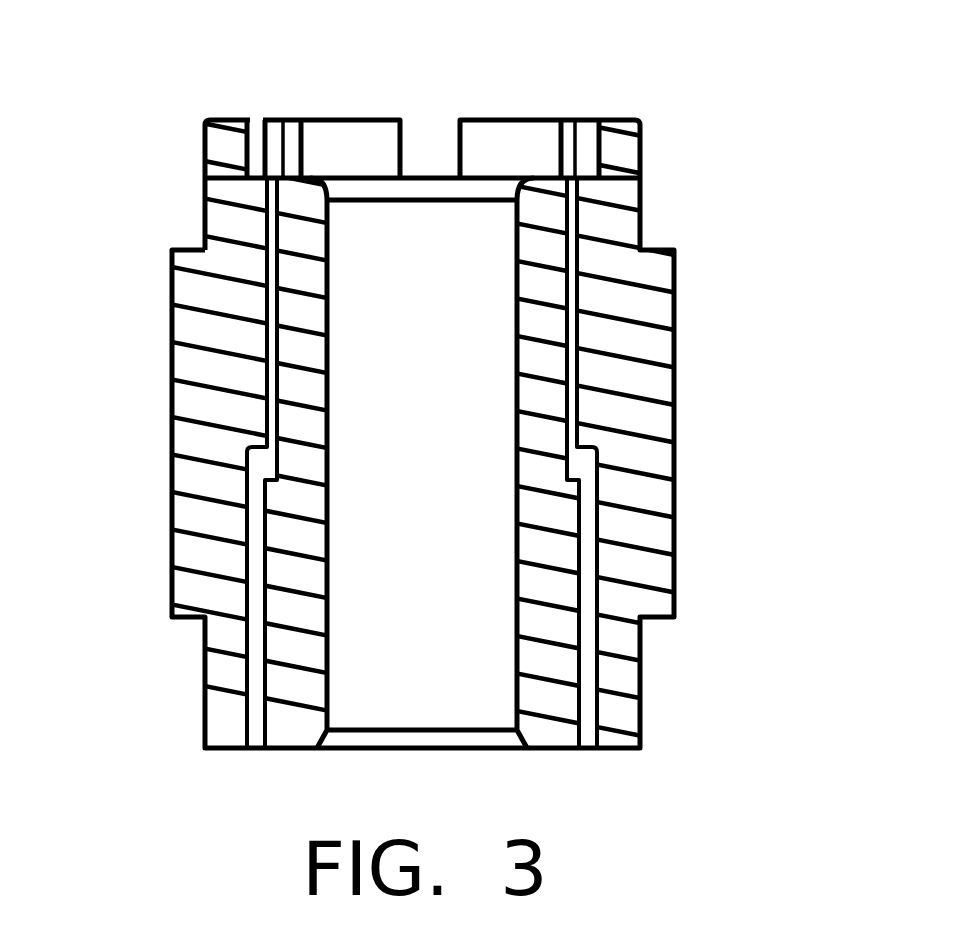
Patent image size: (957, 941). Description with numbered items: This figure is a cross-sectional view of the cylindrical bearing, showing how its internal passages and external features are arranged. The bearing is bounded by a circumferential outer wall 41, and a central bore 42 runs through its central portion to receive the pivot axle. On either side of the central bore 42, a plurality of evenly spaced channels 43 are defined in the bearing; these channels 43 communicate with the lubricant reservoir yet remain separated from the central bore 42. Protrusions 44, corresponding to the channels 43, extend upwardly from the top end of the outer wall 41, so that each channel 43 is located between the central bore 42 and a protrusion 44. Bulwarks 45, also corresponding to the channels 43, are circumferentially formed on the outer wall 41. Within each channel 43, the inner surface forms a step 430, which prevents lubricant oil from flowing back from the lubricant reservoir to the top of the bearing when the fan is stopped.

The outer wall 41 is at (642, 693).
The central bore 42 is at (455, 218).
The channels 43 is at (585, 540).
The protrusions 44 is at (345, 155).
The bulwarks 45 is at (193, 283).
The step 430 is at (250, 443).